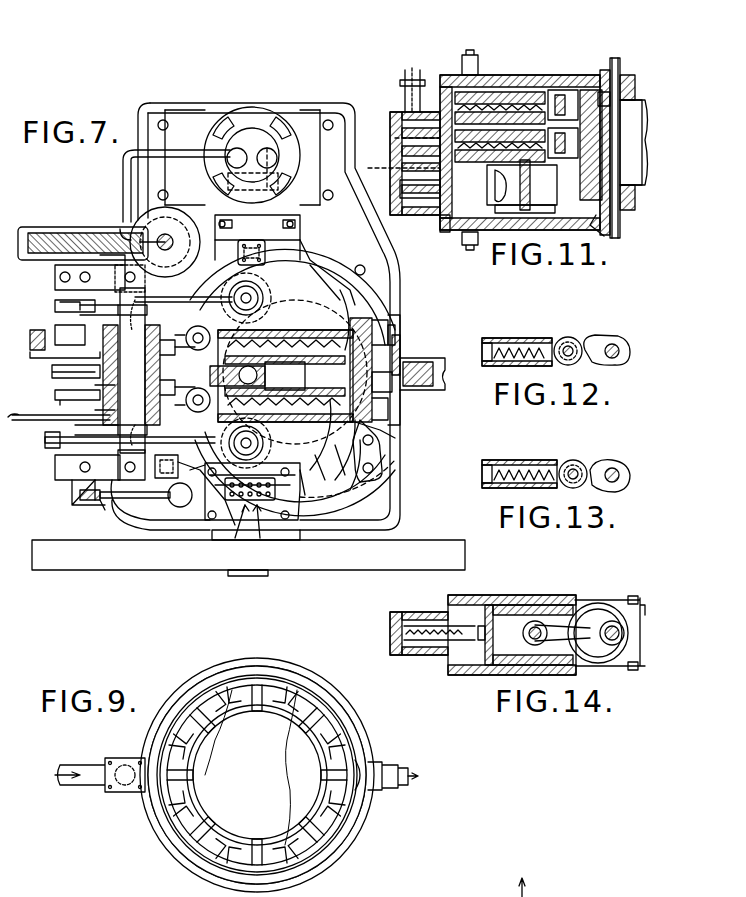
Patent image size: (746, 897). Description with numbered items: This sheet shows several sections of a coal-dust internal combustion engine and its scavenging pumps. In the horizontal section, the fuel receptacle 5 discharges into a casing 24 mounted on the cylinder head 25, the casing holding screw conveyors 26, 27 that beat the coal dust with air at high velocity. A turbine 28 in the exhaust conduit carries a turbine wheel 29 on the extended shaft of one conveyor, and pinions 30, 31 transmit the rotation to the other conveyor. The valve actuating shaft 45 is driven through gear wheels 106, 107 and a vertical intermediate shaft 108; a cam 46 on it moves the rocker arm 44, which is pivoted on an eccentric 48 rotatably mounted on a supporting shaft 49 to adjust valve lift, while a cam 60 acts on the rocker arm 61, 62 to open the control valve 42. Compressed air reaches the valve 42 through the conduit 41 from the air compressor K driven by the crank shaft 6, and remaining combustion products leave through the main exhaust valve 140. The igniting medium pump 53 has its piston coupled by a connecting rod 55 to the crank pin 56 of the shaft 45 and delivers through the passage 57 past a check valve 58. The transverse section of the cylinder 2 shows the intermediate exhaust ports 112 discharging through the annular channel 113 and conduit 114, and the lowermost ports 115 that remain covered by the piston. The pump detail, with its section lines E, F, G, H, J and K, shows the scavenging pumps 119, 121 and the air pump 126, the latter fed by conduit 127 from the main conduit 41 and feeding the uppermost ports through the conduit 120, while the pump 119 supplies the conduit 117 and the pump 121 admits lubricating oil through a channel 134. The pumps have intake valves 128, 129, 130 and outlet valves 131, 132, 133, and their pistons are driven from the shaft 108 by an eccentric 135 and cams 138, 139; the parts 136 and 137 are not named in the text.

In FIG. 7, the air compressor K is at (252, 130).
In FIG. 11, the air compressor K is at (648, 162).
In FIG. 7, the air conduit 41 is at (123, 165).
In FIG. 7, the gear wheel 107 is at (62, 238).
In FIG. 7, the vertical intermediate shaft 108 is at (121, 230).
In FIG. 11, the vertical intermediate shaft 108 is at (616, 225).
In FIG. 12, the vertical intermediate shaft 108 is at (614, 343).
In FIG. 13, the vertical intermediate shaft 108 is at (614, 467).
In FIG. 14, the vertical intermediate shaft 108 is at (612, 622).
In FIG. 7, the gear wheel 106 is at (177, 225).
In FIG. 7, the main exhaust valve 140 is at (268, 226).
In FIG. 7, the rocker arm 62 is at (229, 298).
In FIG. 7, the screw conveyor 27 is at (300, 420).
In FIG. 7, the screw conveyor 26 is at (282, 345).
In FIG. 7, the casing 24 is at (302, 395).
In FIG. 7, the receptacle 5 is at (281, 376).
In FIG. 7, the pinion 30 is at (382, 330).
In FIG. 7, the turbine 28 is at (398, 328).
In FIG. 7, the turbine wheel 29 is at (402, 374).
In FIG. 7, the pinion 31 is at (396, 408).
In FIG. 7, the cylinder head 25 is at (350, 462).
In FIG. 7, the valve actuating shaft 45 is at (60, 268).
In FIG. 7, the cam 60 is at (70, 310).
In FIG. 7, the rocker arm 61 is at (70, 335).
In FIG. 7, the eccentric 48 is at (30, 348).
In FIG. 7, the cam 46 is at (52, 372).
In FIG. 7, the supporting shaft 49 is at (55, 393).
In FIG. 7, the rocker arm 44 is at (190, 337).
In FIG. 7, the control valve 42 is at (202, 345).
In FIG. 7, the check valve 58 is at (180, 508).
In FIG. 7, the pump 53 is at (80, 495).
In FIG. 7, the connecting rod 55 is at (75, 502).
In FIG. 7, the crank pin 56 is at (100, 503).
In FIG. 7, the passage 57 is at (140, 495).
In FIG. 7, the crank shaft 6 is at (243, 573).
In FIG. 11, the air pump 126 is at (555, 218).
In FIG. 14, the air pump 126 is at (478, 678).
In FIG. 11, the conduit 117 is at (490, 90).
In FIG. 11, the outlet valve 133 is at (520, 90).
In FIG. 11, the valve 136 is at (560, 108).
In FIG. 11, the cam 139 is at (573, 145).
In FIG. 13, the cam 139 is at (595, 470).
In FIG. 11, the outlet valve 131 is at (508, 210).
In FIG. 14, the outlet valve 131 is at (446, 670).
In FIG. 11, the plate 137 is at (592, 80).
In FIG. 11, the cam 138 is at (604, 92).
In FIG. 12, the cam 138 is at (595, 342).
In FIG. 11, the eccentric 135 is at (594, 232).
In FIG. 14, the eccentric 135 is at (585, 615).
In FIG. 11, the outlet valve 132 is at (410, 122).
In FIG. 11, the channel 134 is at (405, 112).
In FIG. 11, the conduit 120 is at (415, 82).
In FIG. 11, the section line E is at (442, 93).
In FIG. 11, the section line G is at (426, 147).
In FIG. 11, the section line J is at (403, 157).
In FIG. 11, the section line F is at (655, 95).
In FIG. 11, the section line H is at (648, 132).
In FIG. 11, the intake valve 130 is at (478, 78).
In FIG. 11, the intake valve 129 is at (432, 198).
In FIG. 11, the intake valve 128 is at (445, 232).
In FIG. 11, the conduit 127 is at (470, 248).
In FIG. 12, the scavenging pump 119 is at (525, 333).
In FIG. 13, the scavenging pump 121 is at (528, 455).
In FIG. 9, the annular channel 113 is at (248, 668).
In FIG. 9, the cylinder 2 is at (257, 775).
In FIG. 9, the ports 112 is at (257, 775).
In FIG. 9, the ports 115 is at (320, 775).
In FIG. 9, the conduit 114 is at (392, 762).